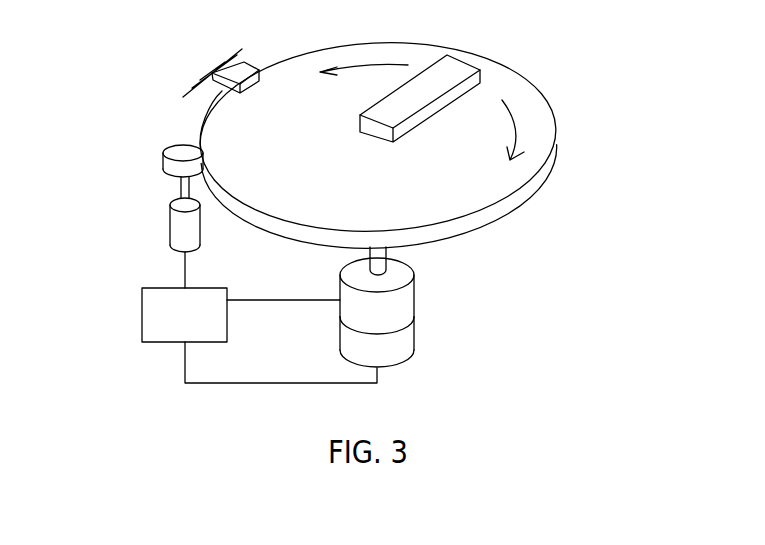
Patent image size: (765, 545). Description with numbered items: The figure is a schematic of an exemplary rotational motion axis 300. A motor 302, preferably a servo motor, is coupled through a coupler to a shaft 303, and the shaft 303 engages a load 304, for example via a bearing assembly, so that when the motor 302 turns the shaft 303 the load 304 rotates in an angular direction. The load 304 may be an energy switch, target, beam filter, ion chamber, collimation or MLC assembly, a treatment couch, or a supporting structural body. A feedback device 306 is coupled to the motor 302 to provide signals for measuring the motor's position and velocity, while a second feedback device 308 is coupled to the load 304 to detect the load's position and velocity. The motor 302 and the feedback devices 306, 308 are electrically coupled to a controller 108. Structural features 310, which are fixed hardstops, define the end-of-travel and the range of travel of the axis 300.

The rotational motion axis 300 is at (622, 88).
The load 304 is at (513, 205).
The structural features 310 is at (210, 72).
The shaft 303 is at (382, 267).
The motor 302 is at (412, 305).
The feedback device 306 is at (408, 340).
The controller 108 is at (142, 320).
The feedback device 308 is at (172, 225).